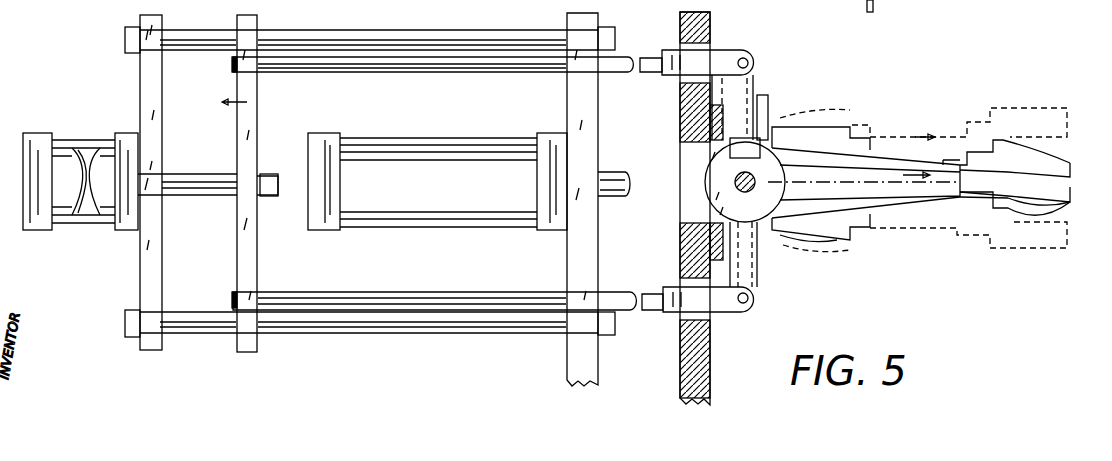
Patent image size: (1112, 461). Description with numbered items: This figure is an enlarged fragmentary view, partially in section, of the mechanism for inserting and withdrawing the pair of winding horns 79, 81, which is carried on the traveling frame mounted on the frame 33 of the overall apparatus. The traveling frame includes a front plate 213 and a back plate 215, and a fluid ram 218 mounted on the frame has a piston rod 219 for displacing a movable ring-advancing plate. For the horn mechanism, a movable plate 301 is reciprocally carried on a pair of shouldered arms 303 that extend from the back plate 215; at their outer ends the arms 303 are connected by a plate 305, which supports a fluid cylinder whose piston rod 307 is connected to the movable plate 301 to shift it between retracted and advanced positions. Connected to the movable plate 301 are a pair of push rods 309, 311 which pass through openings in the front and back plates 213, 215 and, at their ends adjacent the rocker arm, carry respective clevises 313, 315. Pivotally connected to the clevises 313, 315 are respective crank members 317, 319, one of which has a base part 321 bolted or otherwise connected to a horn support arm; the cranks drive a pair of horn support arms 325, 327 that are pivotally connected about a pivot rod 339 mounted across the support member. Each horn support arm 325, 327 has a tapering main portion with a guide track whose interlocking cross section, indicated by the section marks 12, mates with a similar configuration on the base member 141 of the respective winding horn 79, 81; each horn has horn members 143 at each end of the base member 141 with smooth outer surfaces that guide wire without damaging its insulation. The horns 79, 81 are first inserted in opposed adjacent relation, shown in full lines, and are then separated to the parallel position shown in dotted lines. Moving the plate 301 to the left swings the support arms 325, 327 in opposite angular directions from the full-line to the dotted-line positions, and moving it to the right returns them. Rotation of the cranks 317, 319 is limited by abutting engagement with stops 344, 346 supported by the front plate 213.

The direction of movement 12 is at (923, 157).
The frame 33 is at (845, 0).
The winding horn 79 is at (1003, 153).
The winding horn 81 is at (1018, 208).
The base member 141 is at (943, 160).
The horn members 143 is at (1050, 163).
The front plate 213 is at (690, 367).
The back plate 215 is at (583, 365).
The fluid ram 218 is at (505, 152).
The piston rod 219 is at (620, 180).
The movable plate 301 is at (240, 259).
The shouldered arms 303 is at (412, 20).
The plate 305 is at (152, 105).
The piston rod 307 is at (218, 160).
The push rod 309 is at (403, 62).
The push rod 311 is at (382, 281).
The clevis 313 is at (715, 58).
The clevis 315 is at (728, 307).
The crank member 317 is at (757, 82).
The crank member 319 is at (757, 285).
The base part 321 is at (775, 140).
The horn support arm 325 is at (868, 167).
The horn support arm 327 is at (900, 200).
The pivot rod 339 is at (752, 182).
The stop 344 is at (682, 122).
The stop 346 is at (773, 97).